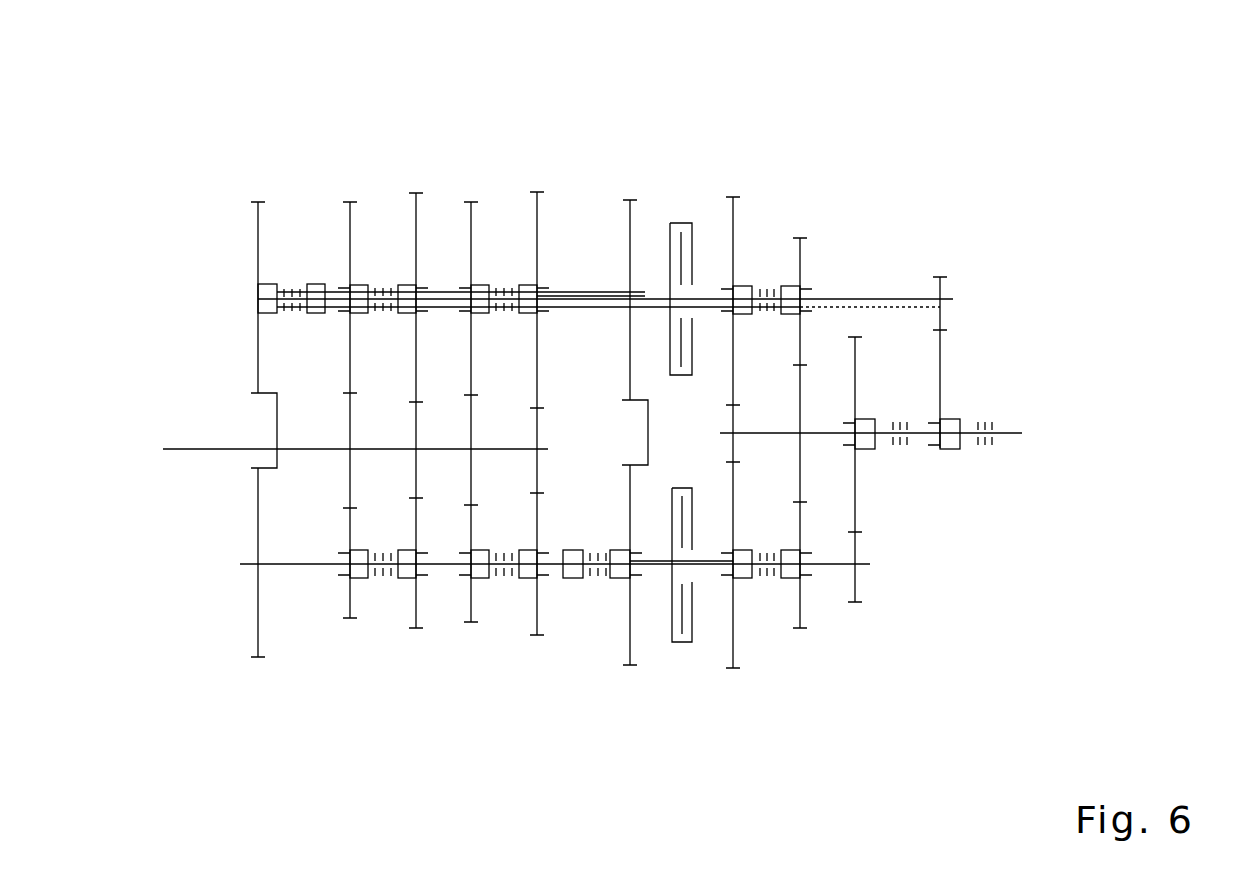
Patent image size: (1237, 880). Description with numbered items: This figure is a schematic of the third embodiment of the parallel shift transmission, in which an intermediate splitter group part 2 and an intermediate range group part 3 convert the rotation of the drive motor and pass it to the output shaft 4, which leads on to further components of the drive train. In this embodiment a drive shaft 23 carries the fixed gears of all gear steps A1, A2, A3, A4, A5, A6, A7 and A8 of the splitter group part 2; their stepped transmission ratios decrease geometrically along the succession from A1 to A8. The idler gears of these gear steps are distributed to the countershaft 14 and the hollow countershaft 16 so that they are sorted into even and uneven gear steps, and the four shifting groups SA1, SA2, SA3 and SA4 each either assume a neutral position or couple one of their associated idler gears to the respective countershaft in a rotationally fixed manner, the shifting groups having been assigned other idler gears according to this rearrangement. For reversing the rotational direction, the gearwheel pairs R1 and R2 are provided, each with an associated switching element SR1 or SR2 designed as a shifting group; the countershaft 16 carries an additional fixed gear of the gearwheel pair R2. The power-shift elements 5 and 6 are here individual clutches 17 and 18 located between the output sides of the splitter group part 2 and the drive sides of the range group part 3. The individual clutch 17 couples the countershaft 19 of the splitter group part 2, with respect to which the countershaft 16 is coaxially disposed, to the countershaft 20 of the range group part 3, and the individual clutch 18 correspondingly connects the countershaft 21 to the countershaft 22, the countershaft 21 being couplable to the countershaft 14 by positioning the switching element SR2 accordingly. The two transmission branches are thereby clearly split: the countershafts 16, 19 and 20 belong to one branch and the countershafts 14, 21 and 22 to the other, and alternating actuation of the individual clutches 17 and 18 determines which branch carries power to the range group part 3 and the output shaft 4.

The gearwheel pair R1 is at (248, 228).
The switching element SR1 is at (292, 270).
The splitter group part 2 is at (336, 148).
The gear step A7 is at (344, 198).
The shifting group SA2 is at (382, 268).
The gear step A3 is at (416, 190).
The gear step A5 is at (470, 198).
The shifting group SA1 is at (505, 258).
The gear step A1 is at (541, 193).
The countershaft 16 is at (574, 292).
The gearwheel pair R2 is at (639, 243).
The individual clutch 17 is at (684, 212).
The power-shift element 5 is at (686, 245).
The countershaft 19 is at (655, 298).
The countershaft 20 is at (829, 300).
The range group part 3 is at (878, 168).
The output shaft 4 is at (1007, 432).
The drive shaft 23 is at (205, 455).
The countershaft 14 is at (317, 565).
The gear step A8 is at (348, 624).
The shifting group SA4 is at (382, 595).
The gear step A4 is at (415, 634).
The gear step A6 is at (469, 632).
The shifting group SA3 is at (503, 597).
The gear step A2 is at (541, 642).
The switching element SR2 is at (595, 600).
The countershaft 21 is at (648, 568).
The individual clutch 18 is at (687, 652).
The power-shift element 6 is at (690, 632).
The countershaft 22 is at (835, 572).